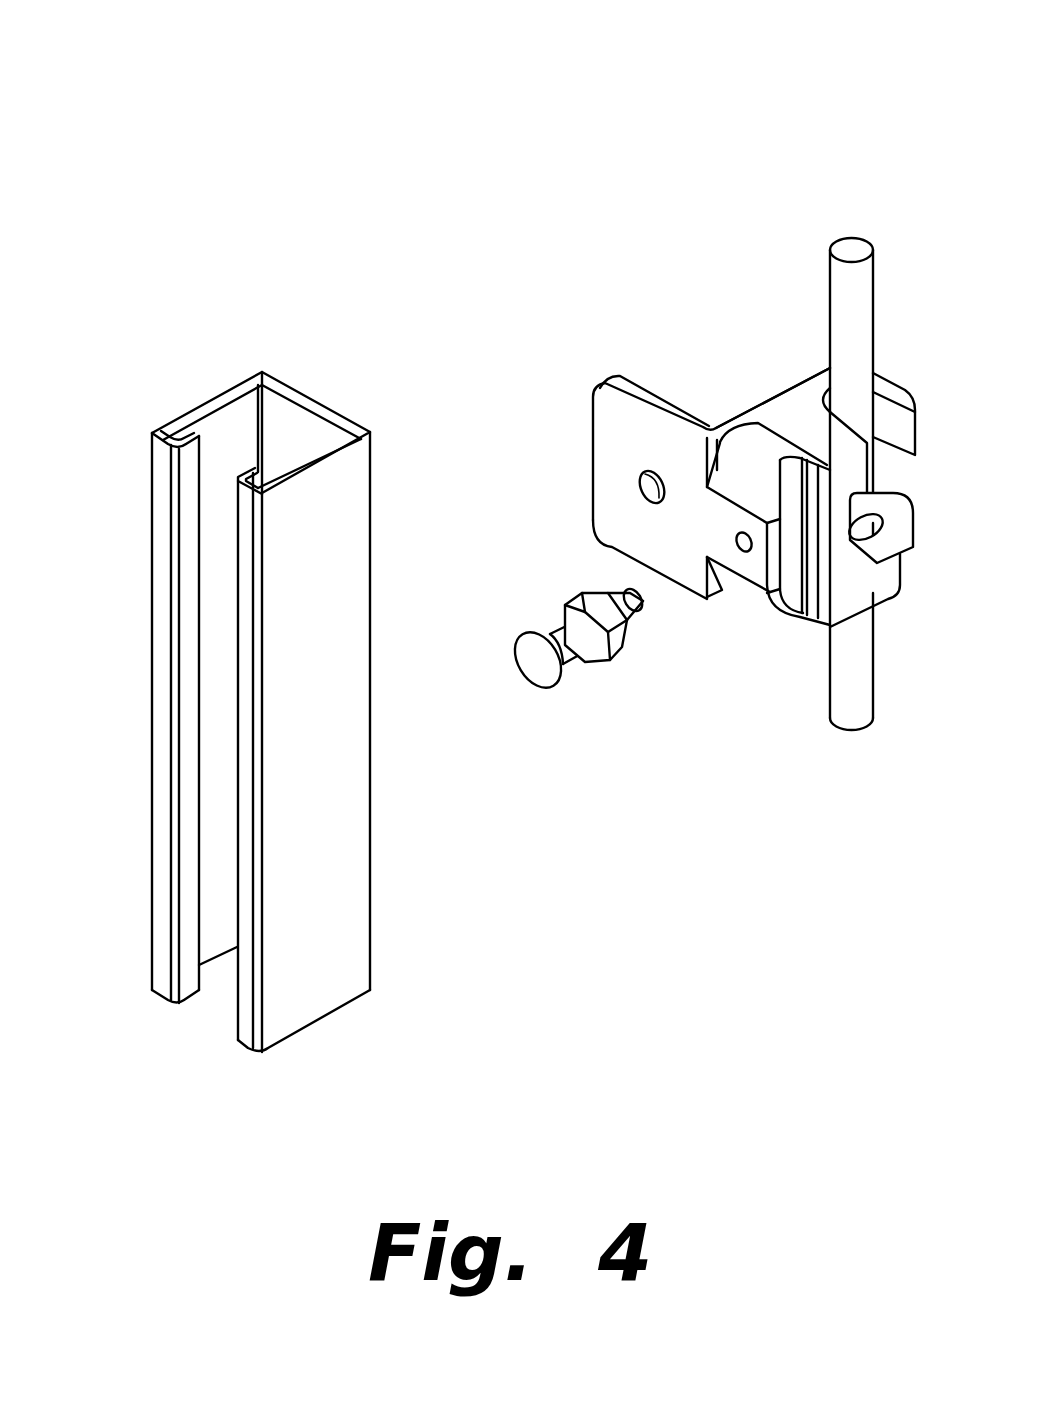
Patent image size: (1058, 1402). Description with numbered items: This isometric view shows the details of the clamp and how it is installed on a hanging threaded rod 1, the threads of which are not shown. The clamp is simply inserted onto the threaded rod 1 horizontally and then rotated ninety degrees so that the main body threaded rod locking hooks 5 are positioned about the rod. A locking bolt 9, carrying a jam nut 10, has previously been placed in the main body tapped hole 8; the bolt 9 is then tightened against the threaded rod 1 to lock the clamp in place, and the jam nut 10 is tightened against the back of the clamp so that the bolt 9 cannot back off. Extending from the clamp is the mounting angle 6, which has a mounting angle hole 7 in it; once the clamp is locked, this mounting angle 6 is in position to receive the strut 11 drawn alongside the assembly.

The threaded rod 1 is at (830, 247).
The main body threaded rod locking hooks 5 is at (818, 373).
The mounting angle 6 is at (598, 373).
The mounting angle hole 7 is at (633, 482).
The main body tapped hole 8 is at (755, 553).
The locking bolt 9 is at (567, 678).
The jam nut 10 is at (615, 668).
The strut 11 is at (205, 380).